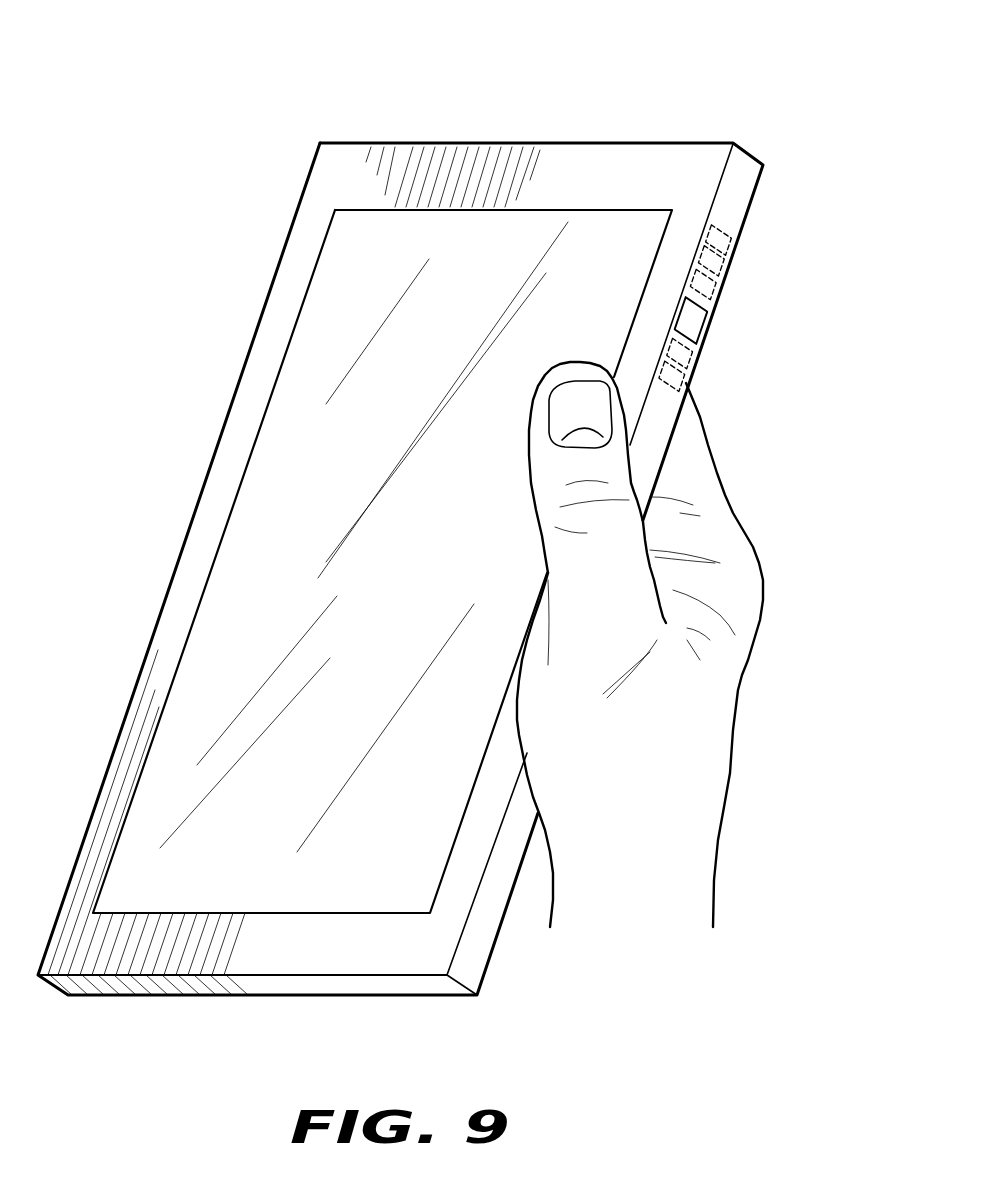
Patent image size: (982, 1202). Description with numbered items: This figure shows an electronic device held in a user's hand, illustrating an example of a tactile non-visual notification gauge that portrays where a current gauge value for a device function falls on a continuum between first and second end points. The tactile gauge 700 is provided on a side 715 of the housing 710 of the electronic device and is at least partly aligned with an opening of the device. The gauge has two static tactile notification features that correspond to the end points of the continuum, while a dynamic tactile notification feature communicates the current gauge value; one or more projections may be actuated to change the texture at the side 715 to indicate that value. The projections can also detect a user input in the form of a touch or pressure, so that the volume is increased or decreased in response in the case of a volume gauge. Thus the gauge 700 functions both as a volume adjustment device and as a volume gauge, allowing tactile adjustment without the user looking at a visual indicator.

The tactile gauge 700 is at (520, 38).
The housing 710 is at (213, 503).
The side 715 is at (650, 443).